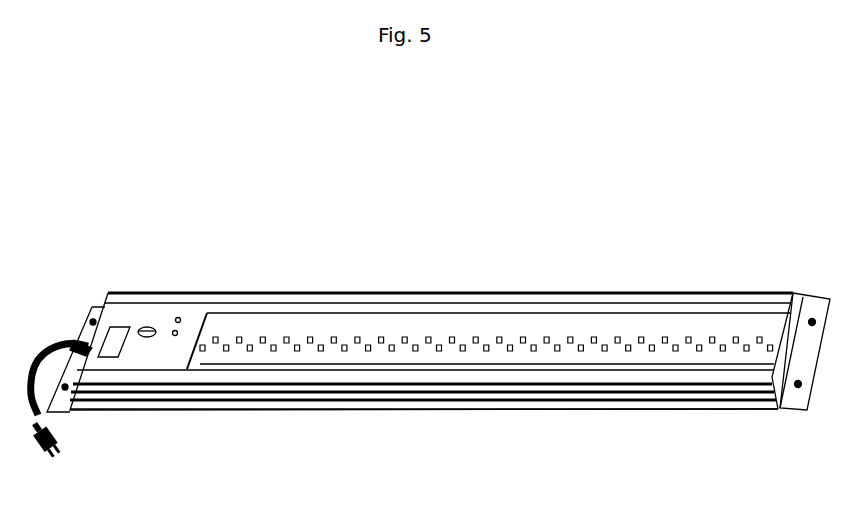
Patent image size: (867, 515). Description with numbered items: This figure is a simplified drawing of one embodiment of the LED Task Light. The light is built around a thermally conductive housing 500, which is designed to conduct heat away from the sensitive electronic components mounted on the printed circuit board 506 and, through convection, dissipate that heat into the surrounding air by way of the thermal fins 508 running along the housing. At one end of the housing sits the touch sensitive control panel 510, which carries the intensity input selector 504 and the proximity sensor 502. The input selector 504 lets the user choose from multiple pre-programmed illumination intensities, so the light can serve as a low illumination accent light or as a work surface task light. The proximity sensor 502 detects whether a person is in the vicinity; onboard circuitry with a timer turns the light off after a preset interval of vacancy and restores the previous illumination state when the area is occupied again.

The thermally conductive housing 500 is at (482, 290).
The proximity sensor 502 is at (150, 327).
The intensity input selector 504 is at (121, 327).
The printed circuit board 506 is at (392, 358).
The thermal fins 508 is at (587, 403).
The touch sensitive control panel 510 is at (192, 327).